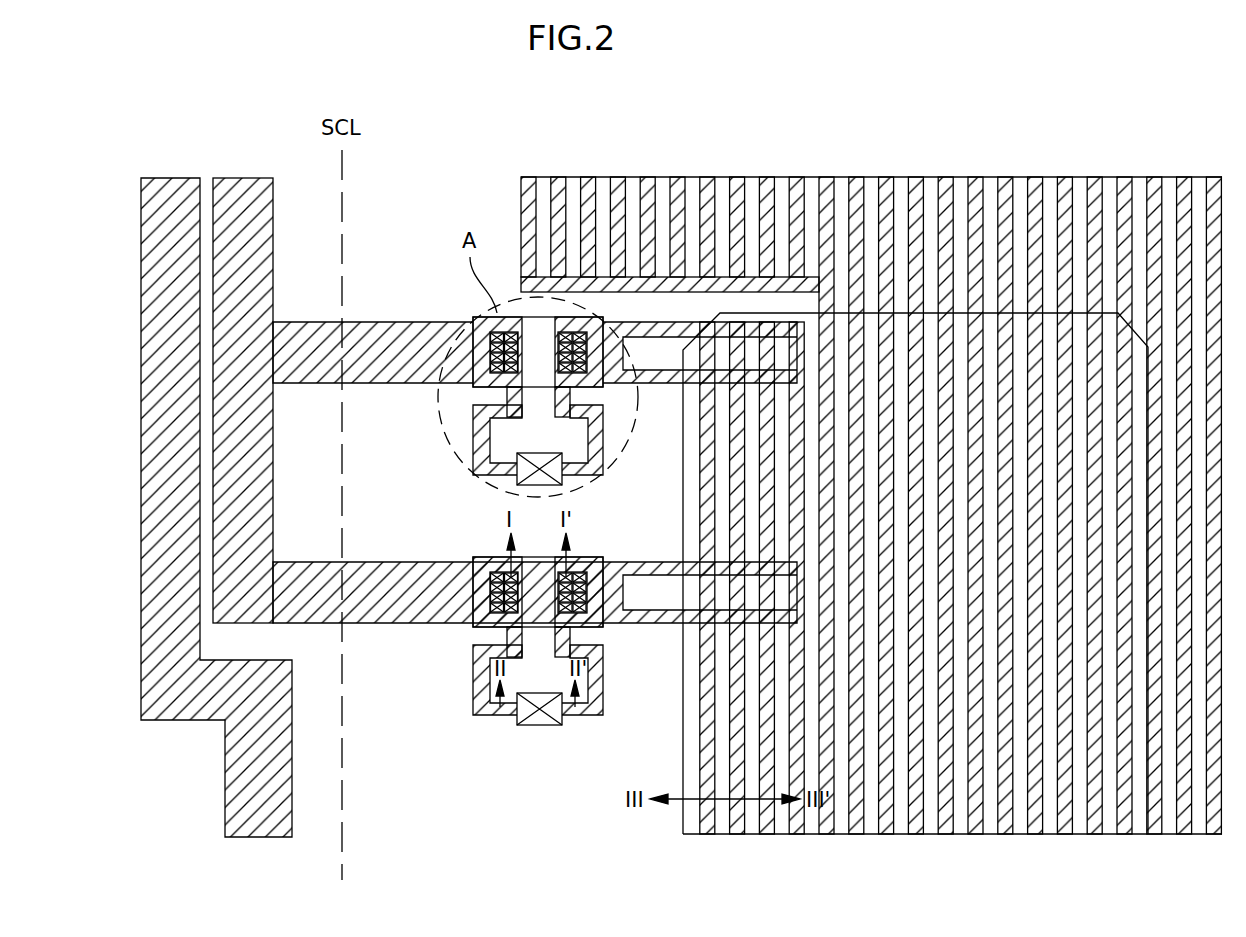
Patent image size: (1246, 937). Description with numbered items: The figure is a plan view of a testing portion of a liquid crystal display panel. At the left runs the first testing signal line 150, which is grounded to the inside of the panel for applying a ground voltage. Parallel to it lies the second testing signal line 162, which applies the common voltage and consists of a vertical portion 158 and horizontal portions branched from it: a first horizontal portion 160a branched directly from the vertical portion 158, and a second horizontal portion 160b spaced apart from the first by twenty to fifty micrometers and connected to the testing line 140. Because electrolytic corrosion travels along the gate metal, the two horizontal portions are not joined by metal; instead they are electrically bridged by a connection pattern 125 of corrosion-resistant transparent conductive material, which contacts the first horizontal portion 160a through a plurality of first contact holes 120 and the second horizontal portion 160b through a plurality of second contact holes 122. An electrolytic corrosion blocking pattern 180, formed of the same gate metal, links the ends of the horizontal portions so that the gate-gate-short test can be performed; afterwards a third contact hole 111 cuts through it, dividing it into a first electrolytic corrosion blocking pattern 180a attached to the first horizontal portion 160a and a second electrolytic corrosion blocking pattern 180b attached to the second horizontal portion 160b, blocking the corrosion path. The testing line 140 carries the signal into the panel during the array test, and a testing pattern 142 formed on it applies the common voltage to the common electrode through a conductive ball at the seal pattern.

The first testing signal line 150 is at (172, 190).
The vertical portion 158 is at (263, 303).
The first horizontal portion 160a is at (373, 328).
The second horizontal portion 160b is at (630, 327).
The second testing signal line 162 is at (505, 400).
The first contact hole 120 is at (502, 314).
The connection pattern 125 is at (488, 558).
The second contact hole 122 is at (578, 613).
The third contact hole 111 is at (560, 716).
The first electrolytic corrosion blocking pattern 180a is at (490, 713).
The second electrolytic corrosion blocking pattern 180b is at (562, 718).
The electrolytic corrosion blocking pattern 180 is at (538, 752).
The testing pattern 142 is at (683, 825).
The testing line 140 is at (710, 826).